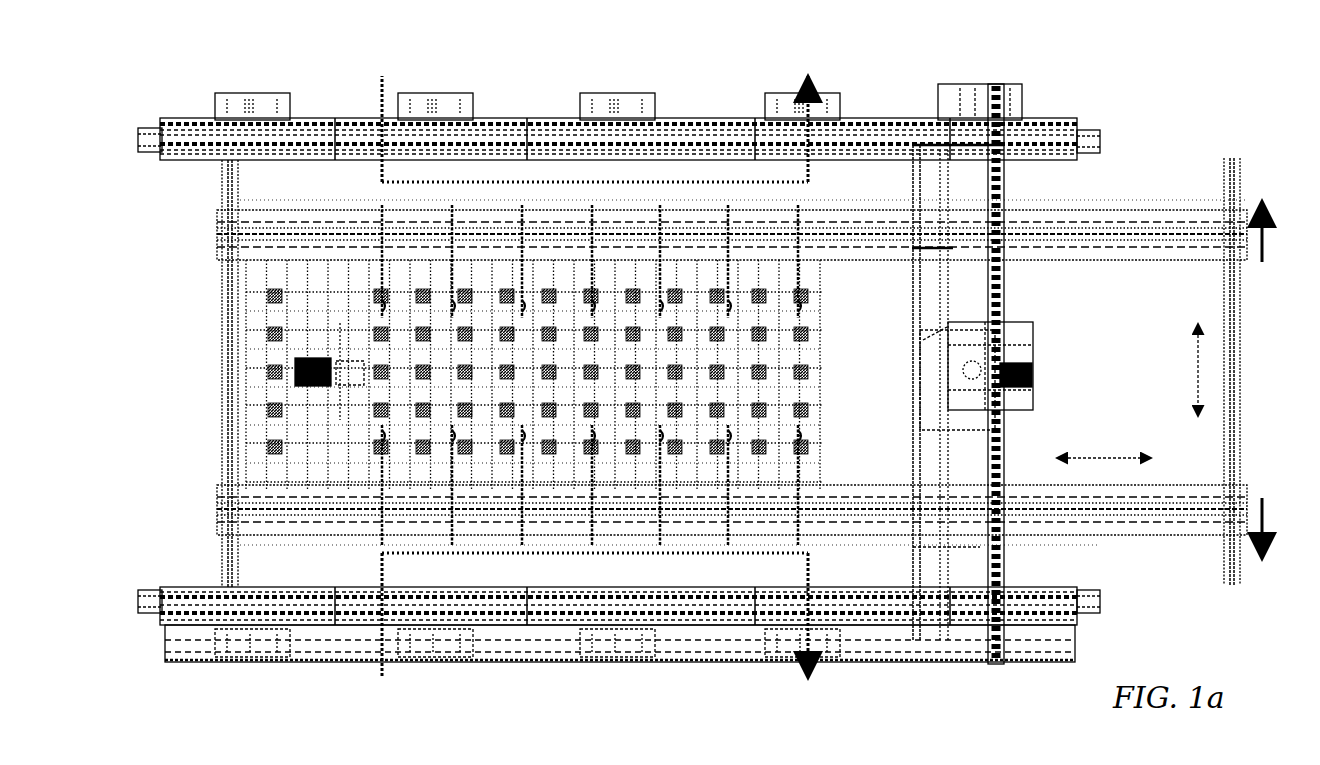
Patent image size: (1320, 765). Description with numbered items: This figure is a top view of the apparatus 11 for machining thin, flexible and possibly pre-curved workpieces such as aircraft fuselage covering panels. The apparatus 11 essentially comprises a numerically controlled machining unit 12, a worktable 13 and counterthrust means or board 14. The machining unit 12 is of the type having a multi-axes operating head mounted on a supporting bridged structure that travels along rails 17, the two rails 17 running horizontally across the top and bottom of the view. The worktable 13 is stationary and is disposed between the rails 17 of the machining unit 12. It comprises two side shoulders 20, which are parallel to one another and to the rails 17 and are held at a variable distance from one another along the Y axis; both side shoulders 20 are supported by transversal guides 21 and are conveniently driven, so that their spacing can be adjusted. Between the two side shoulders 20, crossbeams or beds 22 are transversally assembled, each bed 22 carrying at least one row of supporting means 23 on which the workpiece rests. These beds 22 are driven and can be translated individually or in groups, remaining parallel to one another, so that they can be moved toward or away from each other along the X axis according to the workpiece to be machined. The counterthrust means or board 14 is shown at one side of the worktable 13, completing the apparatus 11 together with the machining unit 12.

The apparatus 11 is at (208, 470).
The numerically controlled machining unit 12 is at (1025, 302).
The worktable 13 is at (843, 343).
The counterthrust means or board 14 is at (308, 356).
The rails 17 is at (320, 114).
The side shoulders 20 is at (1155, 203).
The transversal guides 21 is at (220, 410).
The crossbeams or beds 22 is at (387, 432).
The supporting means 23 is at (375, 333).